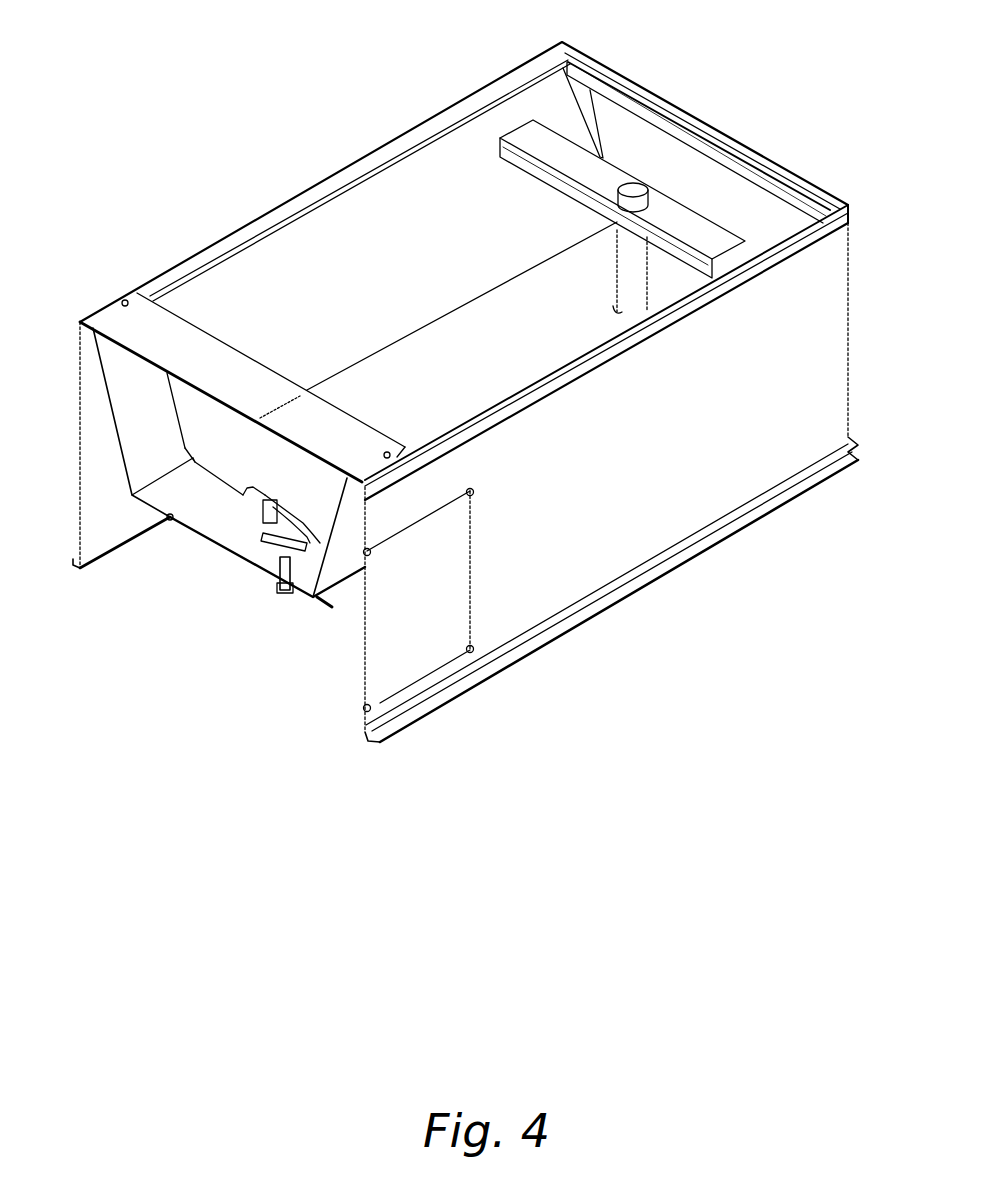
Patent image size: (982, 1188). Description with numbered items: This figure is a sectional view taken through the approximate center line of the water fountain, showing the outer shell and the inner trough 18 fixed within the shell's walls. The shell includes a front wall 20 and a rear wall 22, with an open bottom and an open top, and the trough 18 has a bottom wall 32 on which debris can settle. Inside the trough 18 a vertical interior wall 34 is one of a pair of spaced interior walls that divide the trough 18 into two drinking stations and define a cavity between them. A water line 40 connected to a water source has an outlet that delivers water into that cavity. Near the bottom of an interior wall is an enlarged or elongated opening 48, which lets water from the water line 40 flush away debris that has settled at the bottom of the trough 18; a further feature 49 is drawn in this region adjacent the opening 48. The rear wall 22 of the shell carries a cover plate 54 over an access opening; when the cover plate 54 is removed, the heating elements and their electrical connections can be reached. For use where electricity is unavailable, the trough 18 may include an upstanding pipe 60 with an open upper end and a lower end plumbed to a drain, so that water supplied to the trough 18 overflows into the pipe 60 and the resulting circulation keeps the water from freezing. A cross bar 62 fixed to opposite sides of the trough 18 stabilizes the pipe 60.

The inner trough 18 is at (125, 421).
The front wall 20 is at (90, 501).
The rear wall 22 is at (827, 381).
The bottom wall 32 is at (183, 497).
The vertical interior wall 34 is at (268, 460).
The water line 40 is at (283, 590).
The elongated opening 48 is at (252, 488).
The notch 49 is at (186, 453).
The cover plate 54 is at (455, 572).
The upstanding pipe 60 is at (620, 292).
The cross bar 62 is at (700, 232).